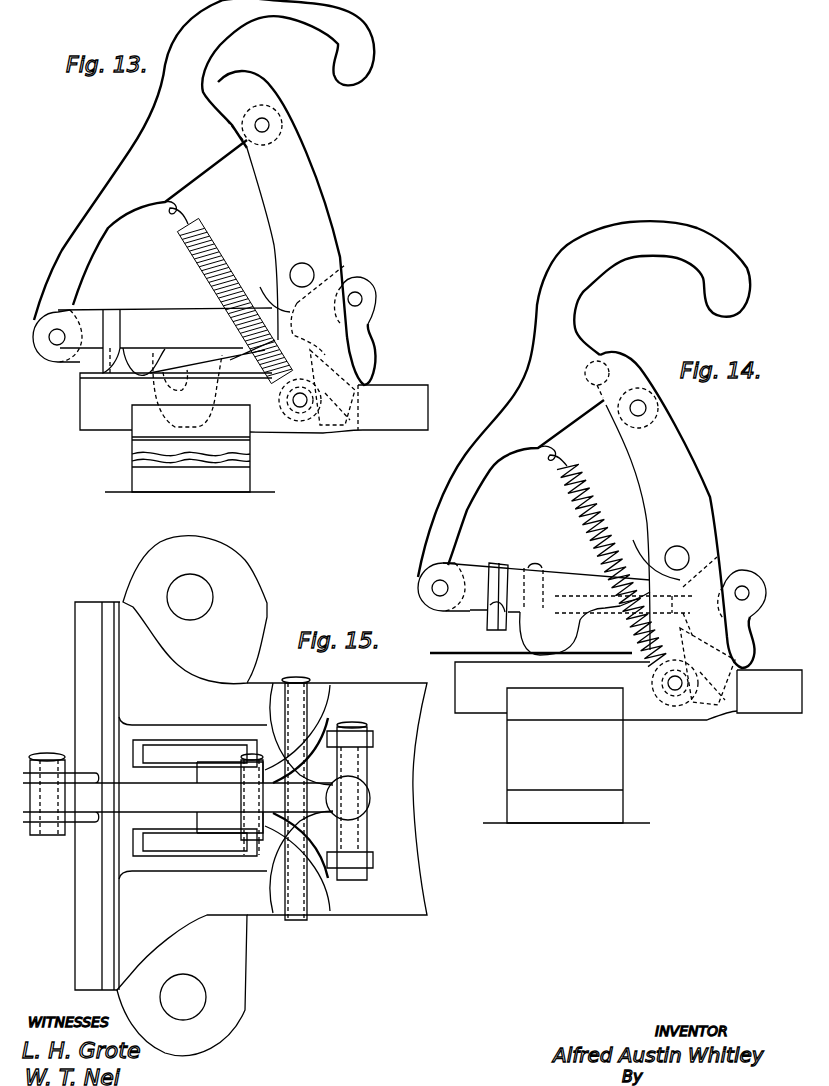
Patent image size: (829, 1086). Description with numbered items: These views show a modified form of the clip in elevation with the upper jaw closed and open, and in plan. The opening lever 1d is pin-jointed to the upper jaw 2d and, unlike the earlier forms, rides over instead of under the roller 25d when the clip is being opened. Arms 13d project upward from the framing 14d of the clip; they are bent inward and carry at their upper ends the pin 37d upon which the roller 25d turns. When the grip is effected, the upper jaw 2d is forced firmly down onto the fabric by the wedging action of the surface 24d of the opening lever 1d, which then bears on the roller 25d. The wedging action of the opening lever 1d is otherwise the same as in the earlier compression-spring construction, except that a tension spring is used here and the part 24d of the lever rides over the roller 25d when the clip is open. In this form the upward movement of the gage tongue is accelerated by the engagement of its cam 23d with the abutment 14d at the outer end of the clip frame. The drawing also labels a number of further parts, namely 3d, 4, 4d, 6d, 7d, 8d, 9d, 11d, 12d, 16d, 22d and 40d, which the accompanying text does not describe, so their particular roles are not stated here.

In FIG. 13, the opening lever 1d is at (204, 160).
In FIG. 14, the opening lever 1d is at (584, 399).
In FIG. 15, the opening lever 1d is at (196, 797).
In FIG. 13, the upper jaw 2d is at (108, 358).
In FIG. 14, the upper jaw 2d is at (489, 618).
In FIG. 15, the upper jaw 2d is at (105, 690).
In FIG. 13, the lever 3d is at (165, 335).
In FIG. 14, the lever 3d is at (530, 575).
In FIG. 15, the lever 3d is at (188, 760).
In FIG. 15, the pin 4 is at (48, 753).
In FIG. 13, the pivot pin of lever 4d is at (60, 334).
In FIG. 14, the pivot pin of lever 4d is at (430, 588).
In FIG. 13, the cam lug 6d is at (182, 352).
In FIG. 14, the cam lug 6d is at (585, 623).
In FIG. 15, the cam lug 6d is at (150, 752).
In FIG. 13, the connecting bar 7d is at (212, 356).
In FIG. 14, the connecting bar 7d is at (608, 622).
In FIG. 13, the pivot pin of arm 8d is at (362, 299).
In FIG. 14, the pivot pin of arm 8d is at (750, 593).
In FIG. 15, the pivot pin of arm 8d is at (355, 722).
In FIG. 13, the pivot pin 9d is at (296, 408).
In FIG. 14, the pivot pin 9d is at (670, 690).
In FIG. 15, the pivot pin 9d is at (300, 678).
In FIG. 13, the hidden link 11d is at (345, 265).
In FIG. 14, the hidden link 11d is at (717, 557).
In FIG. 13, the hole in arm 12d is at (309, 269).
In FIG. 14, the hole in arm 12d is at (684, 552).
In FIG. 13, the arms 13d is at (282, 205).
In FIG. 14, the arms 13d is at (663, 501).
In FIG. 15, the arms 13d is at (299, 798).
In FIG. 13, the framing 14d is at (254, 432).
In FIG. 14, the framing 14d is at (616, 738).
In FIG. 15, the framing 14d is at (405, 752).
In FIG. 13, the spring 16d is at (229, 293).
In FIG. 14, the spring 16d is at (598, 505).
In FIG. 13, the hidden lug 22d is at (340, 440).
In FIG. 14, the hidden lug 22d is at (705, 722).
In FIG. 13, the cam 23d is at (368, 350).
In FIG. 14, the cam 23d is at (745, 638).
In FIG. 13, the wedging surface 24d is at (225, 120).
In FIG. 14, the wedging surface 24d is at (592, 380).
In FIG. 13, the roller 25d is at (278, 110).
In FIG. 14, the roller 25d is at (658, 408).
In FIG. 15, the roller 25d is at (244, 855).
In FIG. 13, the pin 37d is at (272, 127).
In FIG. 14, the pin 37d is at (640, 402).
In FIG. 15, the pin 37d is at (252, 758).
In FIG. 13, the link 40d is at (269, 286).
In FIG. 14, the link 40d is at (651, 555).